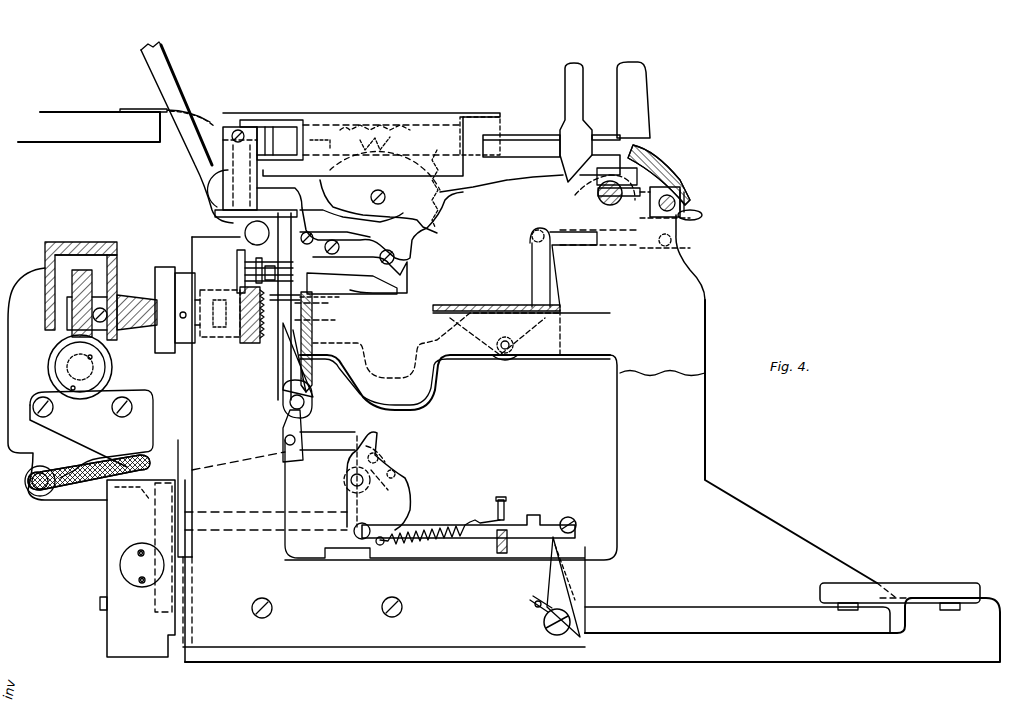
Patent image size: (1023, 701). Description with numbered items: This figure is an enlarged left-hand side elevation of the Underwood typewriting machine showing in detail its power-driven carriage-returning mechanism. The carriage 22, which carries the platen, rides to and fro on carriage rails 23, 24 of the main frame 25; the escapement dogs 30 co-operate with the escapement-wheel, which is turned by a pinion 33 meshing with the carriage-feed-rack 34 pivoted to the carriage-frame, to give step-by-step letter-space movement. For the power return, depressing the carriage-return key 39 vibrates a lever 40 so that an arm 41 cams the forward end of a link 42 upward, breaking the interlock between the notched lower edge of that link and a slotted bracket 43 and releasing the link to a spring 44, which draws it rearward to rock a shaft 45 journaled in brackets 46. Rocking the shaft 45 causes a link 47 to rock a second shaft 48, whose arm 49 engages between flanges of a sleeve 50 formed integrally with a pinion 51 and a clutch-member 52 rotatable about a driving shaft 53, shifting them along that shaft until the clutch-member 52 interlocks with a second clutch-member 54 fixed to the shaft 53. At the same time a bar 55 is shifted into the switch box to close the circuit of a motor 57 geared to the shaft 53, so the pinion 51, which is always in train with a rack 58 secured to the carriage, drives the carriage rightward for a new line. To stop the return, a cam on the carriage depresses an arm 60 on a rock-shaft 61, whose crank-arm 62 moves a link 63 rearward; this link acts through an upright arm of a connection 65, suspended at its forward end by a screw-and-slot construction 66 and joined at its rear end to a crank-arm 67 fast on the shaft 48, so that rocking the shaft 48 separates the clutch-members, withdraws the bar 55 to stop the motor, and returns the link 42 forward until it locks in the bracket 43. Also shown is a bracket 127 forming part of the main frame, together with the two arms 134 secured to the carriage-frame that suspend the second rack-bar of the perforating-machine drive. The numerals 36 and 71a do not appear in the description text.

The carriage 22 is at (528, 170).
The carriage rail 23 is at (608, 202).
The carriage rail 24 is at (259, 182).
The main frame 25 is at (589, 438).
The escapement dogs 30 is at (598, 195).
The pinion 33 is at (331, 300).
The carriage-feed-rack 34 is at (318, 280).
The bracket 36 is at (137, 568).
The carriage-return key 39 is at (905, 590).
The lever 40 is at (772, 618).
The arm 41 is at (565, 574).
The link 42 is at (520, 520).
The slotted bracket 43 is at (497, 505).
The spring 44 is at (437, 524).
The shaft 45 is at (350, 484).
The brackets 46 is at (410, 494).
The link 47 is at (330, 445).
The second shaft 48 is at (305, 402).
The arm 49 is at (308, 380).
The sleeve 50 is at (262, 342).
The pinion 51 is at (250, 330).
The clutch-member 52 is at (220, 324).
The driving shaft 53 is at (142, 322).
The second clutch-member 54 is at (180, 302).
The bar 55 is at (318, 520).
The motor 57 is at (80, 371).
The rack 58 is at (237, 258).
The arm 60 is at (645, 200).
The rock-shaft 61 is at (688, 207).
The crank-arm 62 is at (676, 235).
The link 63 is at (580, 240).
The connection 65 is at (438, 380).
The screw-and-slot construction 66 is at (508, 360).
The crank-arm 67 is at (318, 318).
The strip 71a is at (145, 109).
The bracket 127 is at (89, 127).
The arms 134 is at (174, 84).